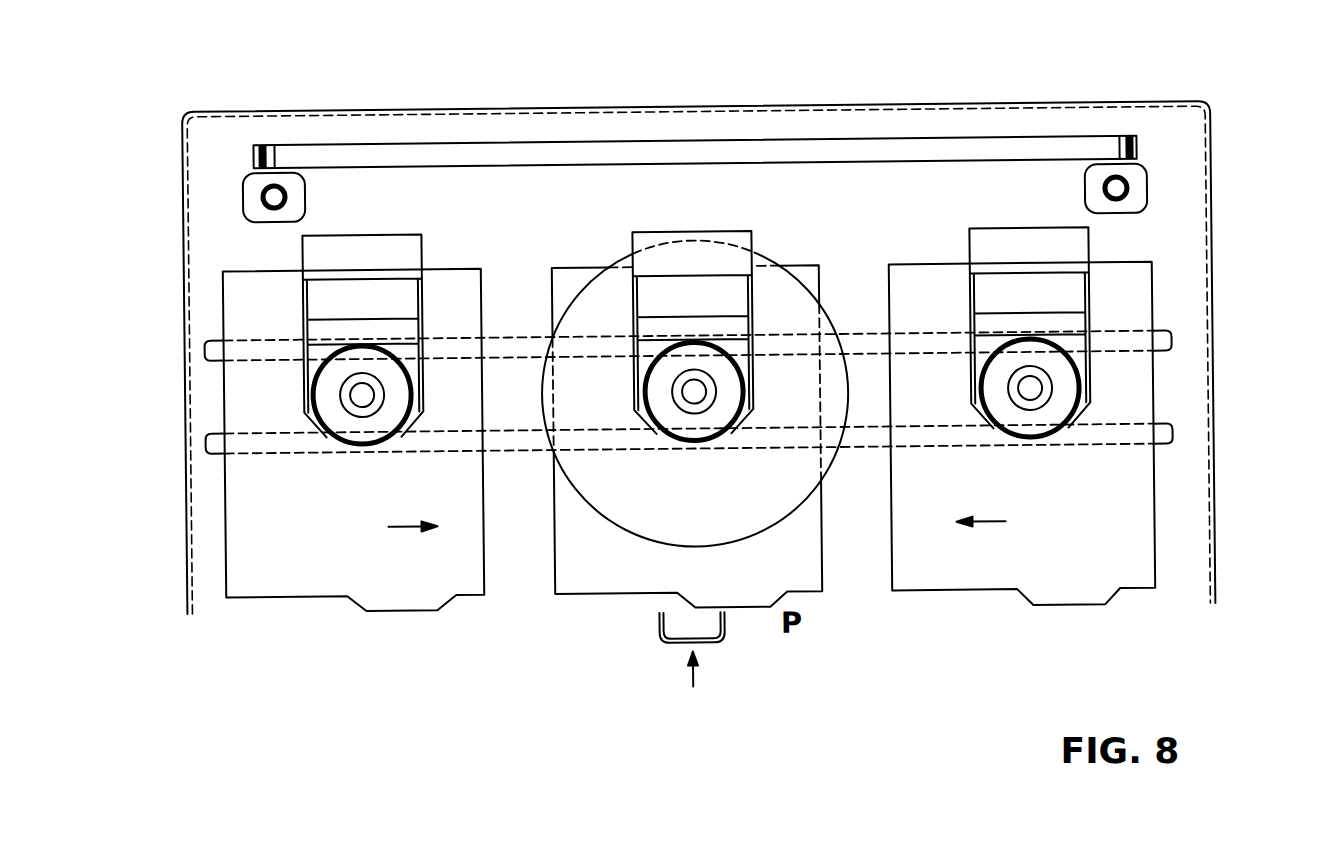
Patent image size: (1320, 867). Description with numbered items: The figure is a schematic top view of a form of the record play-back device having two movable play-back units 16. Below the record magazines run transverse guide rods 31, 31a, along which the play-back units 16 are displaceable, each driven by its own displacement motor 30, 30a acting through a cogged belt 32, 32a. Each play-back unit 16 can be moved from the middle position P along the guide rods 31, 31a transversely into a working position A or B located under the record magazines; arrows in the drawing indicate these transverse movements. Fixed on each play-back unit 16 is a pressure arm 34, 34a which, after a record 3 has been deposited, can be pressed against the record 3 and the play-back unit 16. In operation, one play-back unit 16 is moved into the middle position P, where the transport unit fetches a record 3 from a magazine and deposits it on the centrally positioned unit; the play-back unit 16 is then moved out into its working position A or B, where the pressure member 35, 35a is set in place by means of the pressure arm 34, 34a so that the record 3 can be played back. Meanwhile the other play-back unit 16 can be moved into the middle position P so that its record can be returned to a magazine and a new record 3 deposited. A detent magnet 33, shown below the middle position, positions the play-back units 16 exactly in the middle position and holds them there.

The record 3 is at (613, 496).
The play-back unit 16 is at (248, 550).
The displacement motor 30 is at (252, 183).
The displacement motor 30a is at (1138, 206).
The guide rod 31 is at (203, 429).
The guide rod 31a is at (1158, 352).
The cogged belt 32 is at (268, 144).
The cogged belt 32a is at (1128, 149).
The detent magnet 33 is at (705, 632).
The pressure arm 34 is at (400, 301).
The pressure arm 34a is at (995, 293).
The pressure member 35 is at (346, 411).
The pressure member 35a is at (1038, 413).